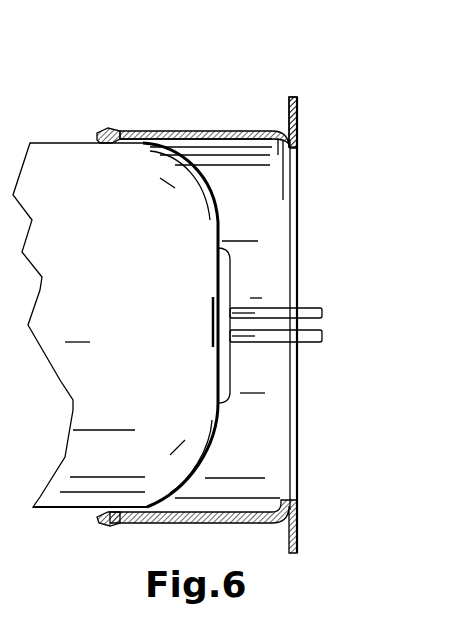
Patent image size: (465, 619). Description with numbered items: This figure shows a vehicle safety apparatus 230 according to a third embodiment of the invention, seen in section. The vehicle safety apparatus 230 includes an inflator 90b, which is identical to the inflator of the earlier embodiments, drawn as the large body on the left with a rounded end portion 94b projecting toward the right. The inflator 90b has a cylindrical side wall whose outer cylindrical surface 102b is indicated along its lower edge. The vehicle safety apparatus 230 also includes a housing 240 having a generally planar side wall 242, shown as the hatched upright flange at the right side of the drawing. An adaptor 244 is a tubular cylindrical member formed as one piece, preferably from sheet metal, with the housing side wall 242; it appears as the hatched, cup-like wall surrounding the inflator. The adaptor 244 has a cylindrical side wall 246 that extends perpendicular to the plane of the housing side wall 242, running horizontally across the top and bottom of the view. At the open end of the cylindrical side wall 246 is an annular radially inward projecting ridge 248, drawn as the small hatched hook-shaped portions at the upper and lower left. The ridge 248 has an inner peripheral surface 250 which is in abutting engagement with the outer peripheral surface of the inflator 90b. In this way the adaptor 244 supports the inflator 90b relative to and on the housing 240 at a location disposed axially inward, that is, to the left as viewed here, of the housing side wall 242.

The vehicle safety apparatus 230 is at (153, 52).
The housing 240 is at (293, 80).
The housing side wall 242 is at (298, 108).
The adaptor 244 is at (254, 116).
The cylindrical side wall 246 is at (200, 130).
The annular radially inward projecting ridge 248 is at (110, 135).
The inflator 90b is at (57, 130).
The end portion 94b is at (219, 216).
The inner peripheral surface 250 is at (113, 505).
The outer cylindrical surface 102b is at (75, 509).